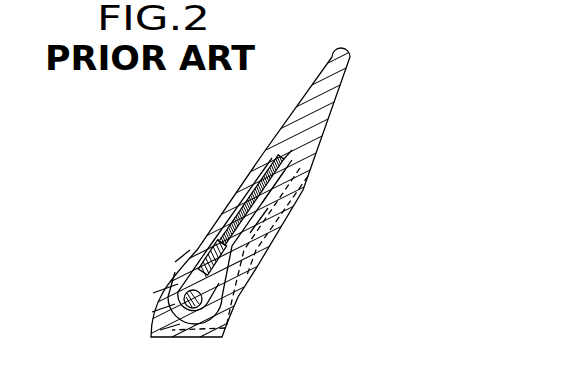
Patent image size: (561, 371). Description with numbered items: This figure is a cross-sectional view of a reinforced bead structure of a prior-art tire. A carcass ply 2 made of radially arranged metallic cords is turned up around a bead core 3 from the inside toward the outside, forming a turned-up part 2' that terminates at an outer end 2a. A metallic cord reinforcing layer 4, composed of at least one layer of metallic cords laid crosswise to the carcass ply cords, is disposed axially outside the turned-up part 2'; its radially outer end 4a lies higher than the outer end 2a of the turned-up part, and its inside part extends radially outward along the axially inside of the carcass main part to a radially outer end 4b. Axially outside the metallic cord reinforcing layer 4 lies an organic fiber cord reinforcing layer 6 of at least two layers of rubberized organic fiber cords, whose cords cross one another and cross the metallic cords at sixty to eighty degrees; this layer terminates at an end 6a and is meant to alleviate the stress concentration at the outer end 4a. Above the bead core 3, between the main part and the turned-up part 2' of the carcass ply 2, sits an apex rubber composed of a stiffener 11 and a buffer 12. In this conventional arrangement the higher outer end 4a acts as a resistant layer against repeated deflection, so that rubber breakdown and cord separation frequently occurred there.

The carcass ply 2 is at (280, 185).
The turned-up part of the carcass ply 2' is at (260, 246).
The outer end of carcass turned-up part 2a is at (266, 208).
The bead core 3 is at (184, 296).
The metallic cord reinforcing layer 4 is at (220, 287).
The outer end of metallic cord reinforcing layer 4a is at (268, 200).
The radially outer end of inside part of reinforcing layer 4b is at (170, 258).
The organic fiber cord reinforcing layer 6 is at (300, 197).
The end of organic fiber cord reinforcing layer 6a is at (307, 140).
The stiffener 11 is at (195, 237).
The buffer 12 is at (262, 177).